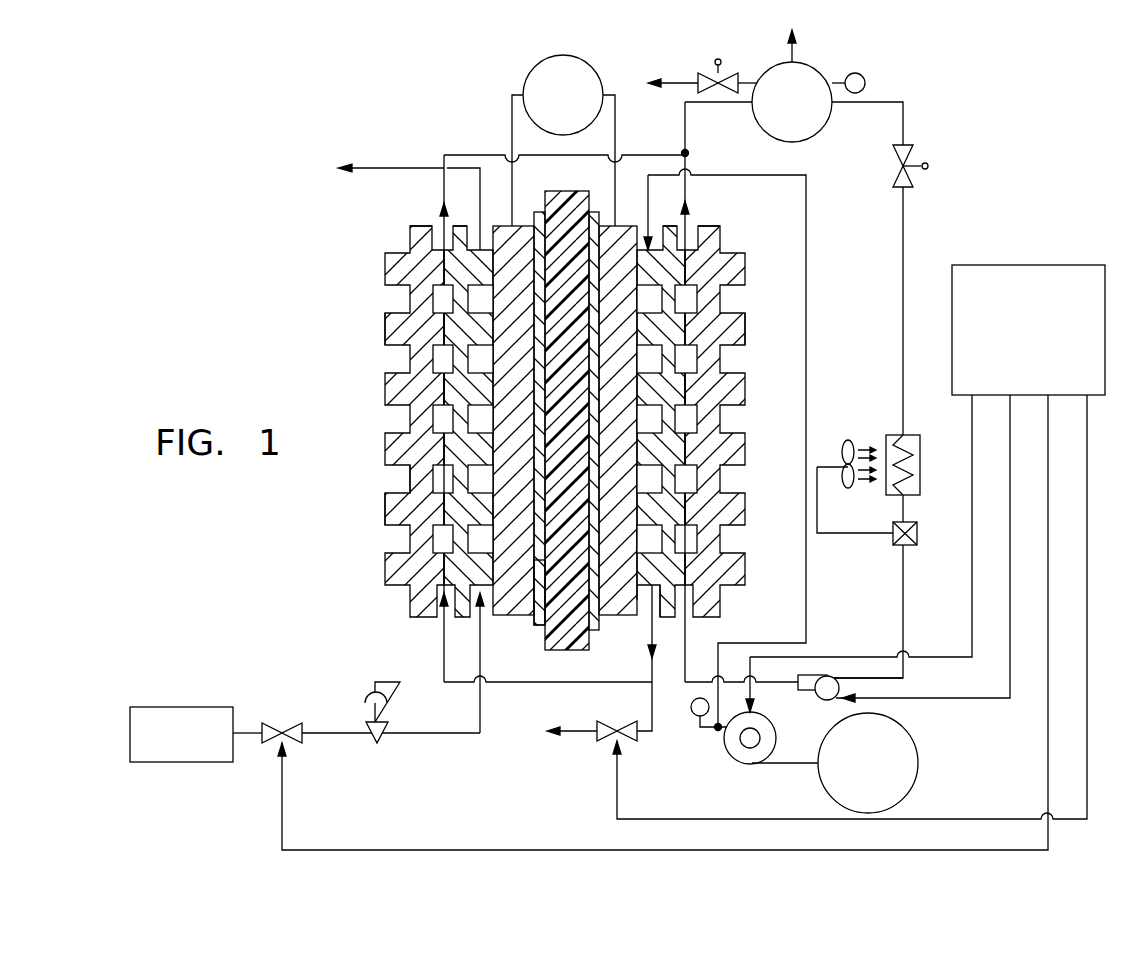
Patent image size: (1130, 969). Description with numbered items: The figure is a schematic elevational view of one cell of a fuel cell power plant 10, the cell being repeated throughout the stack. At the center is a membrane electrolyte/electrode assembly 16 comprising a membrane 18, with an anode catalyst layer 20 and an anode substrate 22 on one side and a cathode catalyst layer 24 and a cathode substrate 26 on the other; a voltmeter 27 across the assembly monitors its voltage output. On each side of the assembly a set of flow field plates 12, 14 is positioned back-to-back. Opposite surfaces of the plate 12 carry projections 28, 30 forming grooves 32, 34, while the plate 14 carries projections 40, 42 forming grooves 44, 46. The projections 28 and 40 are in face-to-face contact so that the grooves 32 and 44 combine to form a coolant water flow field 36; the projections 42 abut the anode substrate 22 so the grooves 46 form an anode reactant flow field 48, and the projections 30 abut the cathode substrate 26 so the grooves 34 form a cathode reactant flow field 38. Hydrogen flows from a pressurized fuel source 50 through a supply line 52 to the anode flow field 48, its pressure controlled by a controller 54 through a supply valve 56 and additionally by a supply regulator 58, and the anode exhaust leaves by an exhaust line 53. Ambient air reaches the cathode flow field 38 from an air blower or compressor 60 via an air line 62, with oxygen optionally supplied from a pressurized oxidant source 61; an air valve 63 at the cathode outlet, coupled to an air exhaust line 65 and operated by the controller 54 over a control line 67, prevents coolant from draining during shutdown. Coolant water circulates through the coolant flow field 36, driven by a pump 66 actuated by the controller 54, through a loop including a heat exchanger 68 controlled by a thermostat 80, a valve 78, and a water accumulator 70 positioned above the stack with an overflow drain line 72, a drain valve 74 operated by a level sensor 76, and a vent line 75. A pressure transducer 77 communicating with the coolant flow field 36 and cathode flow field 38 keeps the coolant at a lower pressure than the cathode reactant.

The fuel cell power plant 10 is at (833, 54).
The flow field plate 12 is at (380, 234).
The flow field plate 14 is at (463, 197).
The membrane electrolyte/electrode assembly 16 is at (562, 668).
The membrane 18 is at (555, 205).
The anode catalyst layer 20 is at (540, 627).
The anode substrate 22 is at (515, 617).
The cathode catalyst layer 24 is at (593, 213).
The cathode substrate 26 is at (628, 237).
The voltmeter 27 is at (545, 57).
The projections 28 is at (448, 268).
The projections 30 is at (385, 507).
The grooves 32 is at (437, 467).
The grooves 34 is at (412, 474).
The coolant water flow field 36 is at (440, 545).
The cathode reactant flow field 38 is at (387, 300).
The projections 40 is at (475, 295).
The projections 42 is at (503, 257).
The grooves 44 is at (440, 368).
The grooves 46 is at (443, 333).
The anode reactant flow field 48 is at (440, 284).
The fuel source 50 is at (175, 707).
The supply line 52 is at (413, 733).
The exhaust line 53 is at (407, 166).
The controller 54 is at (1000, 265).
The supply valve 56 is at (282, 728).
The supply regulator 58 is at (387, 682).
The air blower or compressor 60 is at (733, 752).
The pressurized oxidant source 61 is at (905, 745).
The air line 62 is at (808, 567).
The air valve 63 is at (607, 725).
The air exhaust line 65 is at (585, 731).
The pump 66 is at (828, 678).
The control line 67 is at (619, 782).
The heat exchanger 68 is at (920, 460).
The water accumulator 70 is at (800, 140).
The overflow drain line 72 is at (725, 80).
The drain valve 74 is at (712, 68).
The vent line 75 is at (788, 50).
The level sensor 76 is at (866, 76).
The pressure transducer 77 is at (696, 715).
The valve 78 is at (897, 157).
The thermostat 80 is at (917, 535).